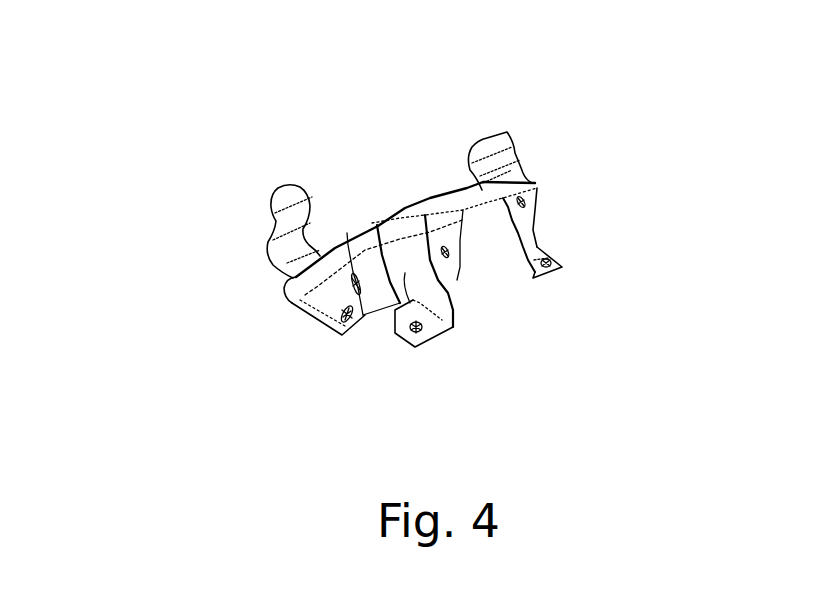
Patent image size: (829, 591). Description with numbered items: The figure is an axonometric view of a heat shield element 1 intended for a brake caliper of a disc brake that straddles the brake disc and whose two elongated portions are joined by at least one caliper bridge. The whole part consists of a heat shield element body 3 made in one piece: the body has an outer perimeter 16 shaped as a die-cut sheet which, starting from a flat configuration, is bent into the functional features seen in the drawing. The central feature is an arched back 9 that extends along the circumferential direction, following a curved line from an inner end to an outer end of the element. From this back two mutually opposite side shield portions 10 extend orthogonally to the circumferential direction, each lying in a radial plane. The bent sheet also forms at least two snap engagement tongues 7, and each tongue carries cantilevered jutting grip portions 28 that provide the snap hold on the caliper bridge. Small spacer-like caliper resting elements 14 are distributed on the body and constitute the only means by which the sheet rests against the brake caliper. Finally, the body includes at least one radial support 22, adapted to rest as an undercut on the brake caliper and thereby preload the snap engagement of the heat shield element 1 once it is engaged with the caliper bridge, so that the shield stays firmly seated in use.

The heat shield element 1 is at (440, 108).
The heat shield element body 3 is at (297, 305).
The snap engagement tongue 7 is at (272, 218).
The arched back 9 is at (433, 200).
The side shield portion 10 is at (347, 233).
The caliper resting element 14 is at (377, 225).
The outer perimeter 16 is at (460, 327).
The radial support 22 is at (410, 330).
The cantilevered jutting grip portion 28 is at (288, 183).